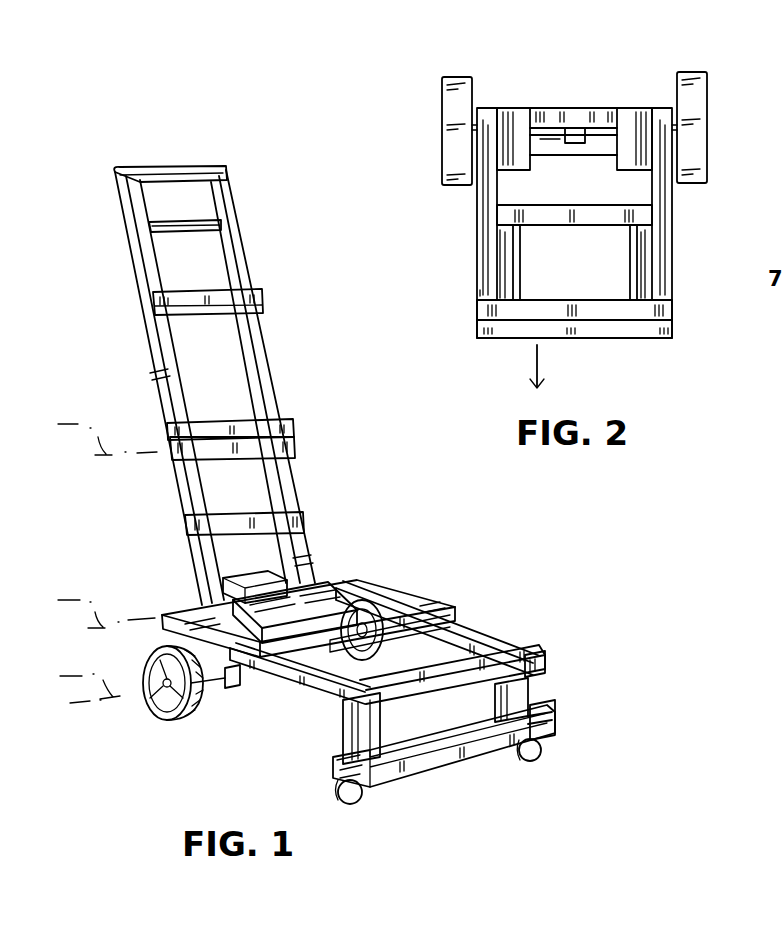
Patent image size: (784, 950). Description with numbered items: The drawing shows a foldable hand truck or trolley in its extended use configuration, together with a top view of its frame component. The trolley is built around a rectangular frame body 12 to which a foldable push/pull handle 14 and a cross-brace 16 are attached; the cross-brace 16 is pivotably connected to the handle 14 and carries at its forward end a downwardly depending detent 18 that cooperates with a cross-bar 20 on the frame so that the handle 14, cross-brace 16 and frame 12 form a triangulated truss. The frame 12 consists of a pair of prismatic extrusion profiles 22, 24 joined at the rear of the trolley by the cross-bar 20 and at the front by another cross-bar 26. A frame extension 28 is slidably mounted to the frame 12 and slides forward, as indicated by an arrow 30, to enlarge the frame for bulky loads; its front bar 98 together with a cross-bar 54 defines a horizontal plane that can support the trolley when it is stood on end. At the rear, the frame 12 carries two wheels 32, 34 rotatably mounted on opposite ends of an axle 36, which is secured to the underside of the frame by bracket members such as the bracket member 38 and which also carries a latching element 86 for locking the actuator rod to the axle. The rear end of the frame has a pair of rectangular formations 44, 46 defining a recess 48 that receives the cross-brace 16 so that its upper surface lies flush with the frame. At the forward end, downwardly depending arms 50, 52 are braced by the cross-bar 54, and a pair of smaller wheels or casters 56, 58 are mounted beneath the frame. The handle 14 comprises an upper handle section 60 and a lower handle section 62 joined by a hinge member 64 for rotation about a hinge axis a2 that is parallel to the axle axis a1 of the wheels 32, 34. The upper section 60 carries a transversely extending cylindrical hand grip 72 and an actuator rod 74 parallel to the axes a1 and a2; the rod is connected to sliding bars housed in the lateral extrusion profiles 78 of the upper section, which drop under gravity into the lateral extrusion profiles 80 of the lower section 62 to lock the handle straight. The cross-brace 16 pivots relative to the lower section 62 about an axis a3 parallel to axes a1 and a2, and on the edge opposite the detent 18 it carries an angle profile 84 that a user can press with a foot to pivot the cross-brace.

In FIG. 1, the rectangular frame body 12 is at (457, 578).
In FIG. 2, the rectangular frame body 12 is at (466, 306).
In FIG. 1, the foldable push/pull handle 14 is at (118, 308).
In FIG. 1, the cross-brace 16 is at (298, 605).
In FIG. 1, the detent 18 is at (345, 615).
In FIG. 2, the cross-bar 20 is at (600, 175).
In FIG. 1, the prismatic extrusion profile 22 is at (312, 650).
In FIG. 2, the prismatic extrusion profile 22 is at (487, 266).
In FIG. 1, the prismatic extrusion profile 24 is at (442, 604).
In FIG. 2, the prismatic extrusion profile 24 is at (667, 266).
In FIG. 1, the cross-bar 26 is at (522, 645).
In FIG. 2, the cross-bar 26 is at (500, 322).
In FIG. 1, the frame extension 28 is at (482, 630).
In FIG. 2, the frame extension 28 is at (650, 282).
In FIG. 2, the arrow 30 is at (540, 372).
In FIG. 1, the wheel 32 is at (165, 722).
In FIG. 2, the wheel 32 is at (444, 94).
In FIG. 1, the wheel 34 is at (400, 632).
In FIG. 2, the wheel 34 is at (700, 85).
In FIG. 1, the axle 36 is at (230, 690).
In FIG. 2, the axle 36 is at (602, 128).
In FIG. 1, the bracket member 38 is at (162, 630).
In FIG. 2, the rectangular formation 44 is at (490, 118).
In FIG. 2, the rectangular formation 46 is at (657, 118).
In FIG. 2, the recess 48 is at (545, 142).
In FIG. 1, the downwardly depending arm 50 is at (340, 752).
In FIG. 1, the downwardly depending arm 52 is at (535, 705).
In FIG. 1, the cross-bar 54 is at (553, 726).
In FIG. 1, the caster 56 is at (352, 800).
In FIG. 1, the caster 58 is at (540, 750).
In FIG. 1, the upper handle section 60 is at (265, 328).
In FIG. 1, the lower handle section 62 is at (305, 530).
In FIG. 1, the hinge member 64 is at (268, 432).
In FIG. 1, the hand grip 72 is at (185, 171).
In FIG. 1, the actuator rod 74 is at (215, 222).
In FIG. 1, the lateral extrusion profiles 78 is at (178, 390).
In FIG. 1, the lateral extrusion profiles 80 is at (200, 495).
In FIG. 1, the angle profile 84 is at (225, 578).
In FIG. 2, the latching element 86 is at (575, 128).
In FIG. 1, the front bar 98 is at (481, 690).
In FIG. 2, the front bar 98 is at (655, 333).
In FIG. 1, the axle axis a1 is at (75, 685).
In FIG. 1, the hinge axis a2 is at (92, 434).
In FIG. 1, the pivot axis a3 is at (91, 608).